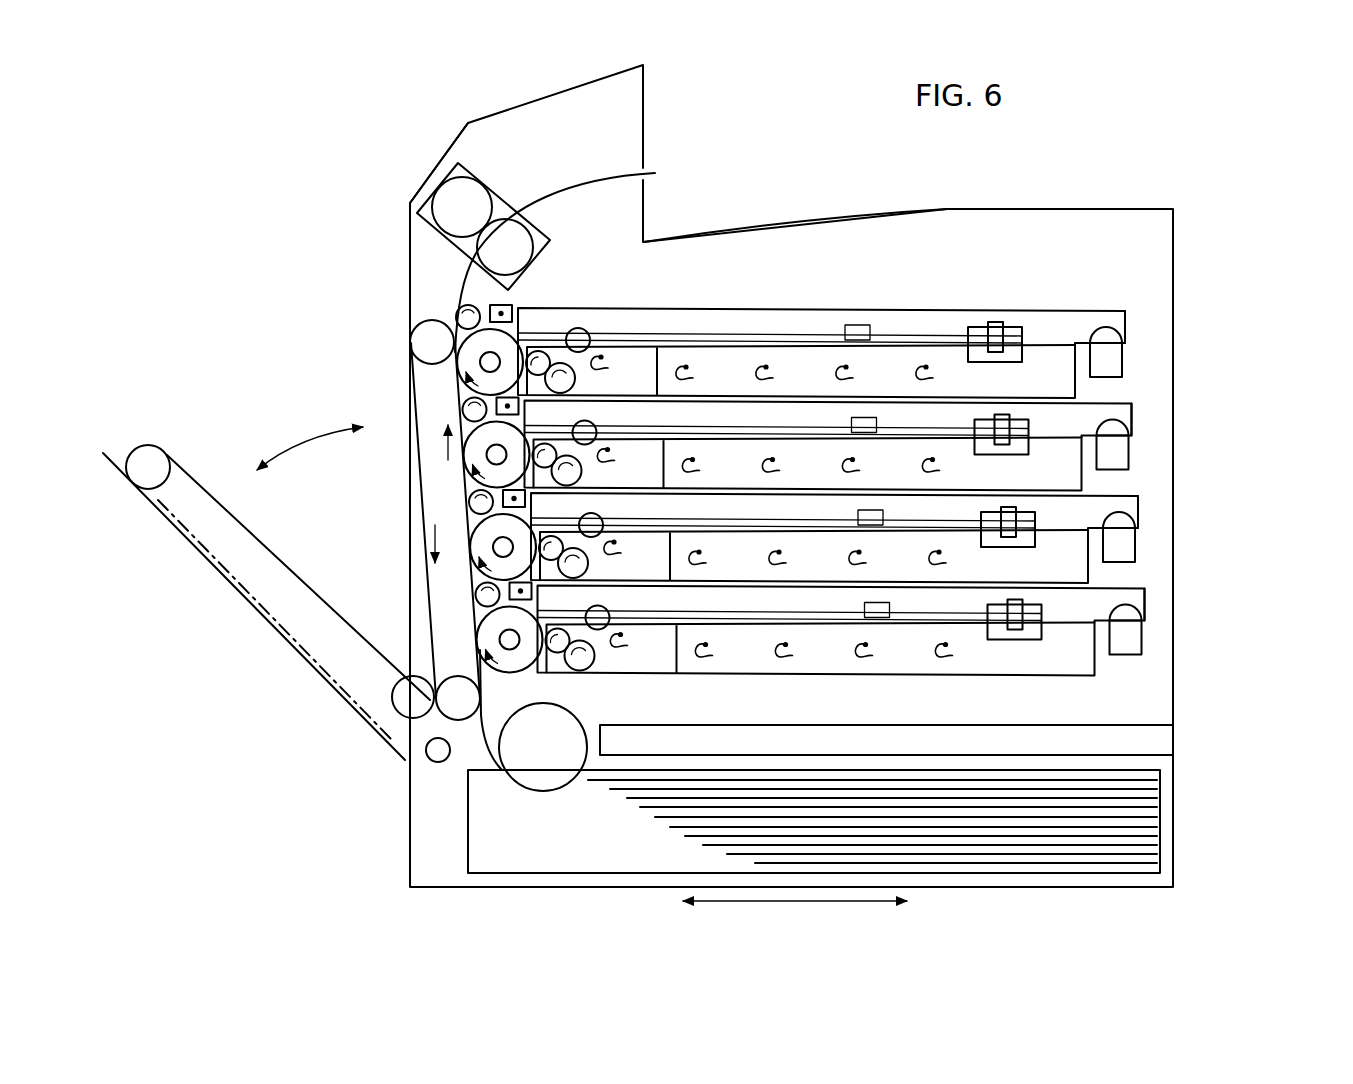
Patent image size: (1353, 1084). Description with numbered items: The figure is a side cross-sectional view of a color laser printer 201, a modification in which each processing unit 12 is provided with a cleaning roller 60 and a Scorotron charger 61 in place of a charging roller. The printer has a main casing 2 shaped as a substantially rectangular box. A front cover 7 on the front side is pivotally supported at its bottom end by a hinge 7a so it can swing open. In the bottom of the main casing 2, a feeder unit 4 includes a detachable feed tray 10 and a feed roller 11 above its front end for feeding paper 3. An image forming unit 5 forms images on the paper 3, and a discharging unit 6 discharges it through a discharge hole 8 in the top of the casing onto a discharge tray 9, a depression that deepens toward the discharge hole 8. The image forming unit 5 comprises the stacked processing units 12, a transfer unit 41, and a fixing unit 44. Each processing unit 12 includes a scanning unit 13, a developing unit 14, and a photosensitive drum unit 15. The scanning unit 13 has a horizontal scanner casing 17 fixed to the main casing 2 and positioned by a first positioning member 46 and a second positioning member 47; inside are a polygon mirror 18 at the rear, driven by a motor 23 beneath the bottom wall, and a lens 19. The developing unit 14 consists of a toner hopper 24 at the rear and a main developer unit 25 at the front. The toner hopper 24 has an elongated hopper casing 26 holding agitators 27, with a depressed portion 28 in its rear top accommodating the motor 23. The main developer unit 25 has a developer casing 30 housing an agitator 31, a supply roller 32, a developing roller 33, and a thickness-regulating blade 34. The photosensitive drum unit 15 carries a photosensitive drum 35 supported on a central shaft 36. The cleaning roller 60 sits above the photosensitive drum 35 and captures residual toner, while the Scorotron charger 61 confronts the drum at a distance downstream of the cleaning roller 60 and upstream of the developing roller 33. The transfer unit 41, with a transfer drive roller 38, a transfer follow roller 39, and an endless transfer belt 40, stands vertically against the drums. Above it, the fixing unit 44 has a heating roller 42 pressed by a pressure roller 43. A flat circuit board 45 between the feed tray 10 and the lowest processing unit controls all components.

The main casing 2 is at (1175, 278).
The paper 3 is at (583, 182).
The feeder unit 4 is at (1178, 840).
The image forming unit 5 is at (947, 292).
The discharging unit 6 is at (672, 202).
The front cover 7 is at (408, 442).
The hinge 7a is at (430, 762).
The discharge hole 8 is at (650, 165).
The discharge tray 9 is at (770, 222).
The feed tray 10 is at (468, 802).
The feed roller 11 is at (530, 792).
The processing unit 12 is at (1152, 337).
The scanning unit 13 is at (1100, 305).
The developing unit 14 is at (1062, 338).
The photosensitive drum unit 15 is at (452, 360).
The scanner casing 17 is at (1127, 328).
The polygon mirror 18 is at (1020, 338).
The lens 19 is at (870, 328).
The motor 23 is at (960, 348).
The toner hopper 24 is at (712, 338).
The main developer unit 25 is at (625, 338).
The hopper casing 26 is at (755, 328).
The agitators 27 is at (829, 512).
The depressed portion 28 is at (1038, 370).
The developer casing 30 is at (645, 345).
The agitator 31 is at (605, 355).
The supply roller 32 is at (574, 380).
The developing roller 33 is at (536, 351).
The thickness-regulating blade 34 is at (560, 363).
The photosensitive drum 35 is at (452, 323).
The central shaft 36 is at (490, 352).
The transfer drive roller 38 is at (460, 722).
The transfer follow roller 39 is at (420, 325).
The transfer belt 40 is at (420, 535).
The transfer unit 41 is at (420, 556).
The heating roller 42 is at (540, 250).
The pressure roller 43 is at (488, 185).
The fixing unit 44 is at (437, 178).
The circuit board 45 is at (1070, 725).
The first positioning member 46 is at (582, 328).
The second positioning member 47 is at (1122, 362).
The cleaning roller 60 is at (466, 305).
The Scorotron charger 61 is at (512, 308).
The color laser printer 201 is at (1090, 918).